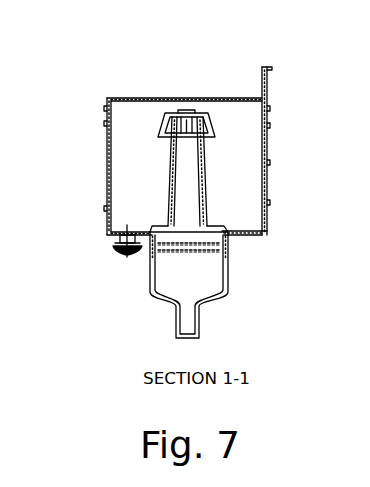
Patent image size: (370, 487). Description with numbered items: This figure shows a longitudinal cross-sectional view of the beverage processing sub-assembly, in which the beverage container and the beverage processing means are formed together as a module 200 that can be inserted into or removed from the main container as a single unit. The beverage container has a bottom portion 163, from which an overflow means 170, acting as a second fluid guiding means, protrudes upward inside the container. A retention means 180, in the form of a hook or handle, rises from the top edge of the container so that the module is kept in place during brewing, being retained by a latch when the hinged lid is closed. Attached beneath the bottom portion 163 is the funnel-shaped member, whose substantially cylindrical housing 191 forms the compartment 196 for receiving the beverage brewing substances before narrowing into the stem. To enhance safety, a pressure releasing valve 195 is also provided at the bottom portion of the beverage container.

The module 200 is at (187, 182).
The overflow means 170 is at (238, 163).
The retention means 180 is at (264, 66).
The bottom portion 163 is at (237, 230).
The cylindrical housing 191 is at (228, 273).
The cup cavity 196 is at (186, 274).
The pressure releasing valve 195 is at (119, 255).